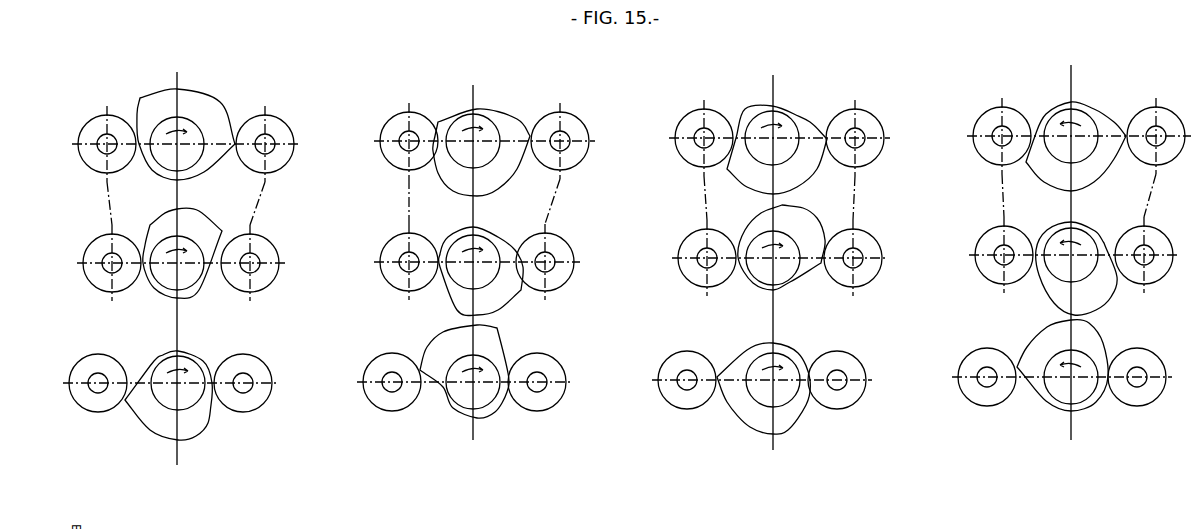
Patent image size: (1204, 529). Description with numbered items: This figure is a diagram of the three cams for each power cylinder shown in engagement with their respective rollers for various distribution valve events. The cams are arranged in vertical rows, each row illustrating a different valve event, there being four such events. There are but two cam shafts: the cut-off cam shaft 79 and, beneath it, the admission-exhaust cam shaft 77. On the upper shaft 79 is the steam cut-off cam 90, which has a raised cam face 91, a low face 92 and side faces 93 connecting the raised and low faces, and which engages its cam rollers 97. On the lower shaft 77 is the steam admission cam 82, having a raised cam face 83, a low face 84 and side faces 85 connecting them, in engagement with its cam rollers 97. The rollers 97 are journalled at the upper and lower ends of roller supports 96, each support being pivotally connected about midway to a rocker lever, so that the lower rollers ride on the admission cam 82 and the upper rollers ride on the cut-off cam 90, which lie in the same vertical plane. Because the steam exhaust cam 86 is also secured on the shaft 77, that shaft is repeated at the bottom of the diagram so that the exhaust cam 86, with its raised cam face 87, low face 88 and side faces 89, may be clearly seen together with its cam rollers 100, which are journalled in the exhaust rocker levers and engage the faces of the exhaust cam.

The lower shaft 77 is at (166, 282).
The upper shaft 79 is at (165, 160).
The steam admission cam 82 is at (213, 218).
The raised cam face 83 is at (192, 208).
The low face 84 is at (188, 293).
The side faces 85 is at (152, 226).
The steam exhaust cam 86 is at (150, 425).
The raised cam face 87 is at (185, 440).
The low face 88 is at (172, 350).
The side faces 89 is at (142, 366).
The steam cut-off cam 90 is at (212, 110).
The raised cam face 91 is at (197, 88).
The low face 92 is at (170, 178).
The side faces 93 is at (148, 135).
The roller support 96 is at (105, 210).
The cam roller 97 is at (82, 160).
The cam roller 100 is at (68, 396).